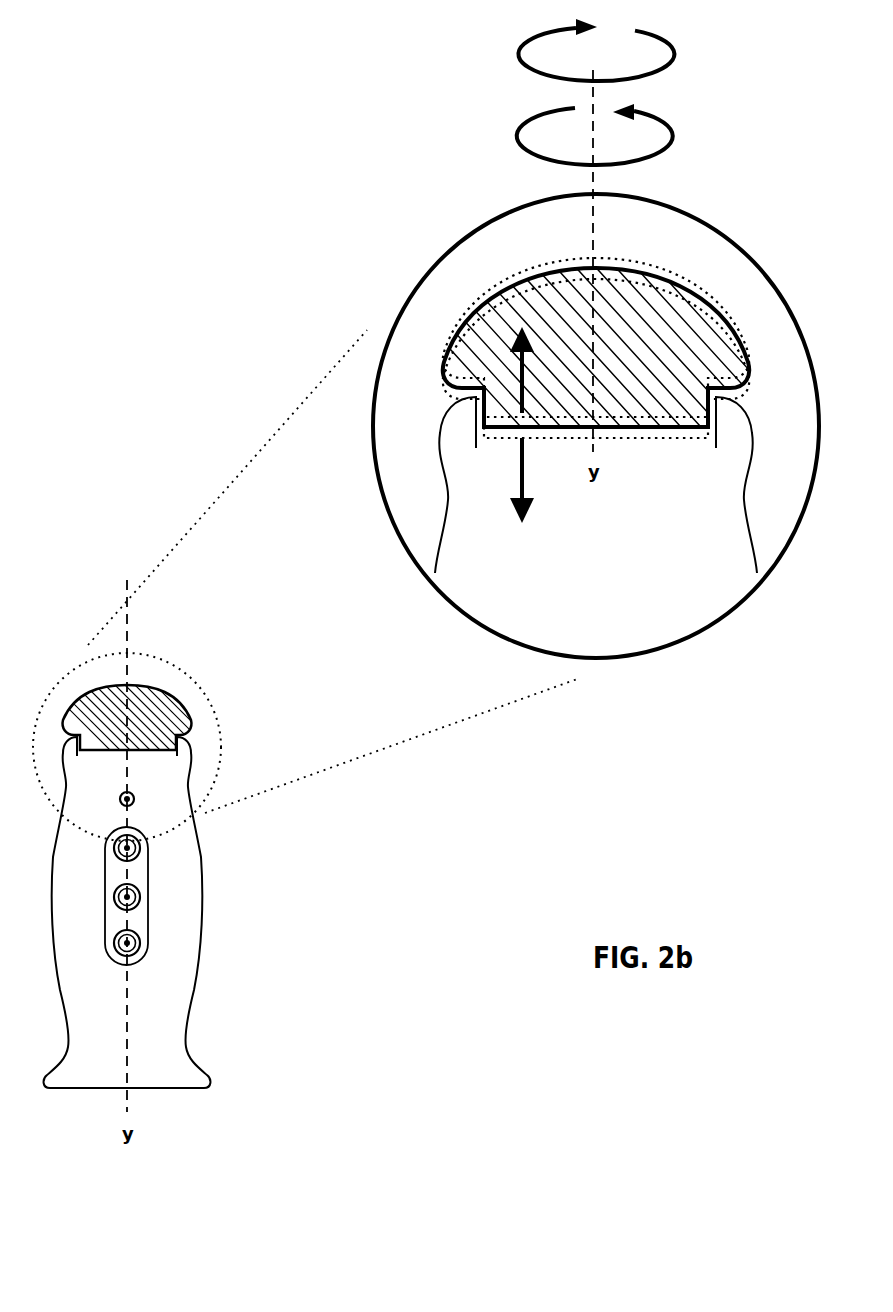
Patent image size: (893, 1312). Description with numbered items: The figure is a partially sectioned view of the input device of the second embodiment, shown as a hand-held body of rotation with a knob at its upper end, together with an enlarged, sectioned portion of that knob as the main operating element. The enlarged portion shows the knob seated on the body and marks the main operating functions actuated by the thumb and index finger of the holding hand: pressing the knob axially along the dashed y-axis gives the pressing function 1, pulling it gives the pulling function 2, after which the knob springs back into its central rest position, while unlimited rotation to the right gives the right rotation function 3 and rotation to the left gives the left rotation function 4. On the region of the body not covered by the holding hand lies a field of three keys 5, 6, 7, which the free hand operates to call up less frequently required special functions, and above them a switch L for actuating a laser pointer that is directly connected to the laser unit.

The pressing function 1 is at (537, 480).
The pulling function 2 is at (537, 370).
The right rotation function 3 is at (622, 50).
The left rotation function 4 is at (622, 134).
The switch L is at (127, 799).
The key 5 is at (127, 848).
The key 6 is at (127, 897).
The key 7 is at (127, 943).